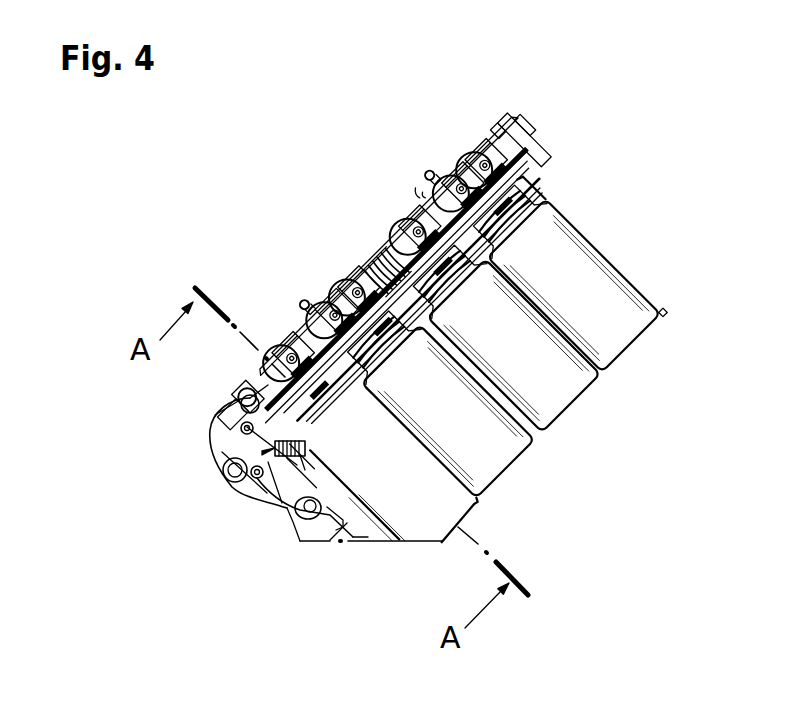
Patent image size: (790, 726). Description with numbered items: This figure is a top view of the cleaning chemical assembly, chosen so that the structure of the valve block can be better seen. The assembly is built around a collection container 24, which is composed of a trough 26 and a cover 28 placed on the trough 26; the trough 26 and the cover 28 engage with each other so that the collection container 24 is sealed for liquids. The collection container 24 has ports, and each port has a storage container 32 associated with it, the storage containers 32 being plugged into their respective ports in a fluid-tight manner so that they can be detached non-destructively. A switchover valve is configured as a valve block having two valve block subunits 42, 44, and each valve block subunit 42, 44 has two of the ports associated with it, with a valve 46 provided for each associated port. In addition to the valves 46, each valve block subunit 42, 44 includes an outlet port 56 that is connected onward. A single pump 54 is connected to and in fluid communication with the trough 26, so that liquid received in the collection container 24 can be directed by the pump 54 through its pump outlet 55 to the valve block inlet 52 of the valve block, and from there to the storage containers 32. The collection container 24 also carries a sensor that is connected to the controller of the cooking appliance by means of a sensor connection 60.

The collection container 24 is at (222, 500).
The trough 26 is at (210, 435).
The cover 28 is at (548, 198).
The storage container 32 is at (455, 510).
The valve block subunit 42 is at (212, 255).
The valve block subunit 44 is at (386, 161).
The valve 46 is at (410, 225).
The valve block inlet 52 is at (247, 428).
The pump 54 is at (325, 541).
The pump outlet 55 is at (282, 503).
The outlet port 56 is at (431, 176).
The sensor connection 60 is at (232, 477).